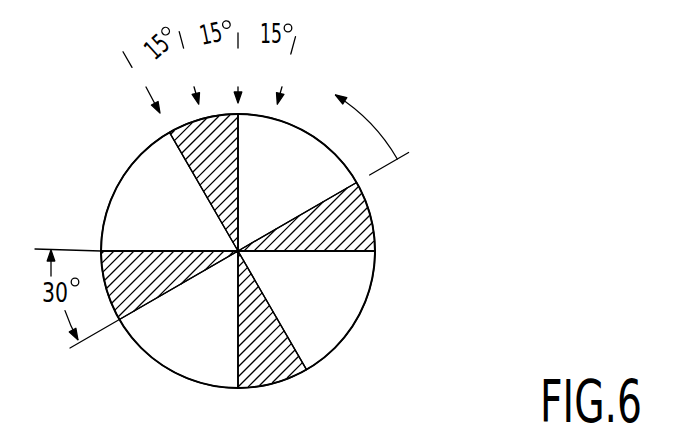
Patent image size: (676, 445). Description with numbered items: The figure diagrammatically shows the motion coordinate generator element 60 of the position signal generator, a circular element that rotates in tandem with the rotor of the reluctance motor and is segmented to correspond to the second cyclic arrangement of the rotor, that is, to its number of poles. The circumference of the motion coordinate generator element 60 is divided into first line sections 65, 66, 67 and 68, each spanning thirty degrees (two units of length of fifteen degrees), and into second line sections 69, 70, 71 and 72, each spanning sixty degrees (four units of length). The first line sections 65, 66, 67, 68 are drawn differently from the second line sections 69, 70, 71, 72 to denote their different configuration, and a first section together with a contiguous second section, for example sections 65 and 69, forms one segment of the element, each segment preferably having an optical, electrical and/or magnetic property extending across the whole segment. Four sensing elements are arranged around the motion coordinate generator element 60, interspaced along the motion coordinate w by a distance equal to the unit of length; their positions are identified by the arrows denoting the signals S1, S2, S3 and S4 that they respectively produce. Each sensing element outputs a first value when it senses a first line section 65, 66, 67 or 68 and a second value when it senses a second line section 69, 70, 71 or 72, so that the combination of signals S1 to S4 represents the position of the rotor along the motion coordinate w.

The motion coordinate generator element 60 is at (453, 343).
The first line section 65 is at (202, 148).
The first line section 66 is at (143, 290).
The first line section 67 is at (285, 366).
The first line section 68 is at (340, 227).
The second line section 69 is at (169, 191).
The second line section 70 is at (178, 319).
The second line section 71 is at (306, 310).
The second line section 72 is at (297, 182).
The signal S1 is at (137, 88).
The signal S2 is at (191, 77).
The signal S3 is at (241, 77).
The signal S4 is at (288, 79).
The motion coordinate w is at (372, 125).